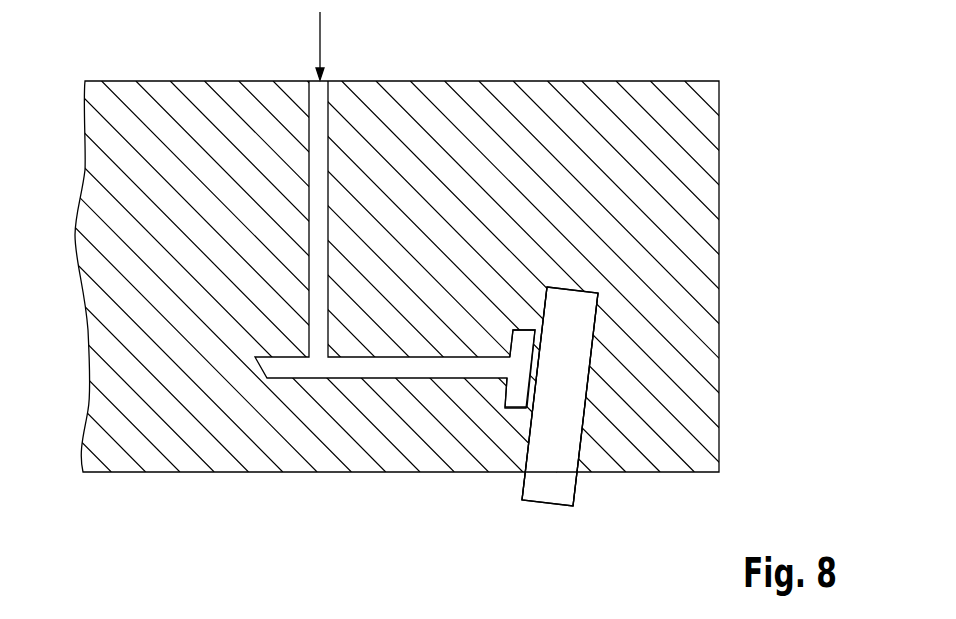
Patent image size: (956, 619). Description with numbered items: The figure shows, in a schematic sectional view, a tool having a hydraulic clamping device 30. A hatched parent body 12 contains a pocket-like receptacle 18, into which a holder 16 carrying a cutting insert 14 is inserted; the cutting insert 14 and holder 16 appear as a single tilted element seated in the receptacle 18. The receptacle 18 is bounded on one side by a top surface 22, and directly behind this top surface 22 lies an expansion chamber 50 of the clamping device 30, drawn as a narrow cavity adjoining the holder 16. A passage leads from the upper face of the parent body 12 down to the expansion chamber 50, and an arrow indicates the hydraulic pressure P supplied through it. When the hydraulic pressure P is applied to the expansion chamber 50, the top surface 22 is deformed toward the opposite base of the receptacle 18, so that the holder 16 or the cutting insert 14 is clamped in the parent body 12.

The parent body 12 is at (434, 96).
The hydraulic pressure P is at (328, 46).
The hydraulic clamping device 30 is at (478, 427).
The expansion chamber 50 is at (517, 400).
The cutting insert 14 is at (545, 490).
The holder 16 is at (560, 429).
The top surface 22 is at (538, 362).
The pocket-like receptacle 18 is at (586, 388).